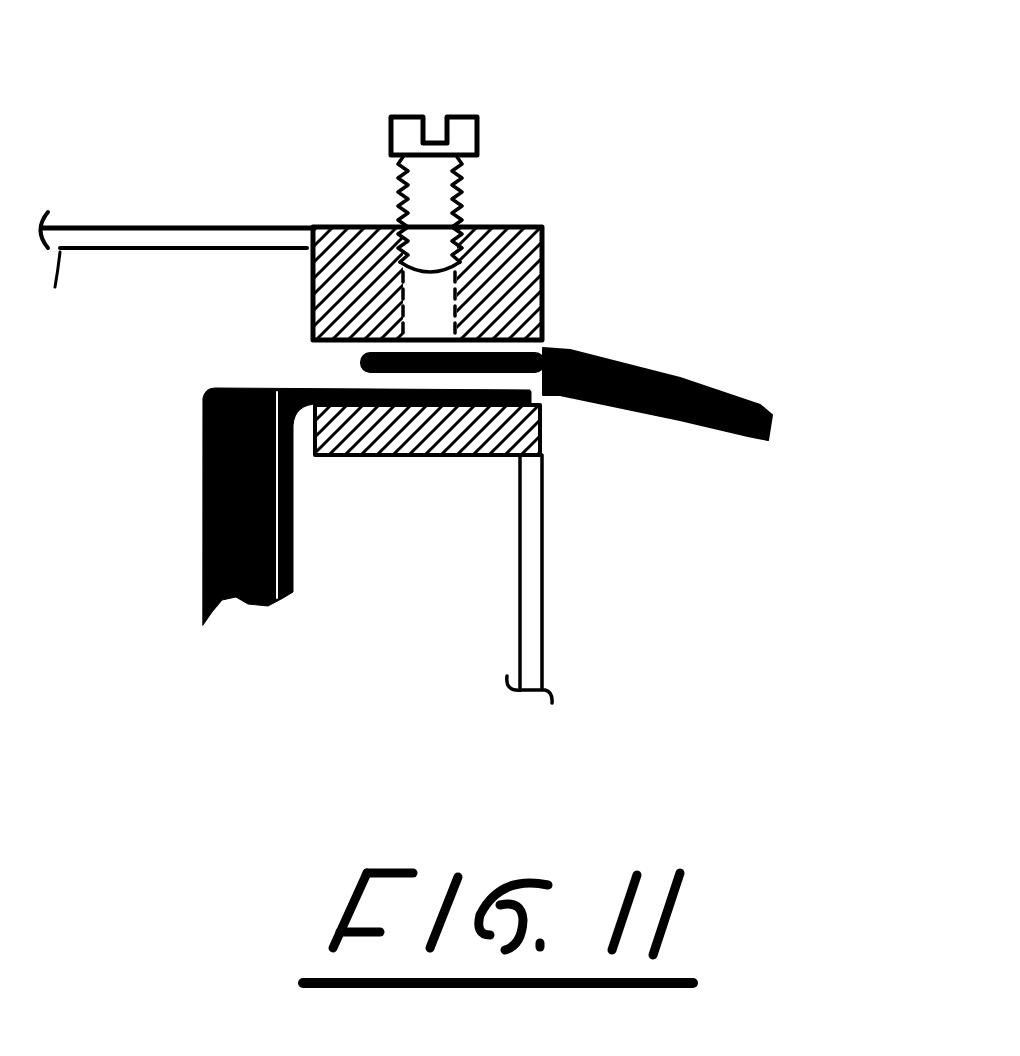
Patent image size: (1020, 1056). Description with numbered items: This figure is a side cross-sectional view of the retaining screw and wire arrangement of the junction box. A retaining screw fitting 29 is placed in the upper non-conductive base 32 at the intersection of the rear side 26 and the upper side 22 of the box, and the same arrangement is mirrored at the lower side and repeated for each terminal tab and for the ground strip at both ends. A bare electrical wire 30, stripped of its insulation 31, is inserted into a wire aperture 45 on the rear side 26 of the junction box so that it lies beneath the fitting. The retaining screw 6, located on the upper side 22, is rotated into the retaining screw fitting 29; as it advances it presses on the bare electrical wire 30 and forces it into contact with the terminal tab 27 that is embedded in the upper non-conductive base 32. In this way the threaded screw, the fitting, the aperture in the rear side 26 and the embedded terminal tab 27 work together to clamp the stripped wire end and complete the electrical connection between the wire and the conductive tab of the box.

The retaining screw 6 is at (495, 127).
The upper side 22 is at (247, 228).
The rear side 26 is at (543, 640).
The terminal tab 27 is at (252, 378).
The retaining screw fitting 29 is at (550, 240).
The bare electrical wire 30 is at (473, 355).
The insulation 31 is at (657, 357).
The upper non-conductive base 32 is at (415, 457).
The wire aperture 45 is at (548, 400).